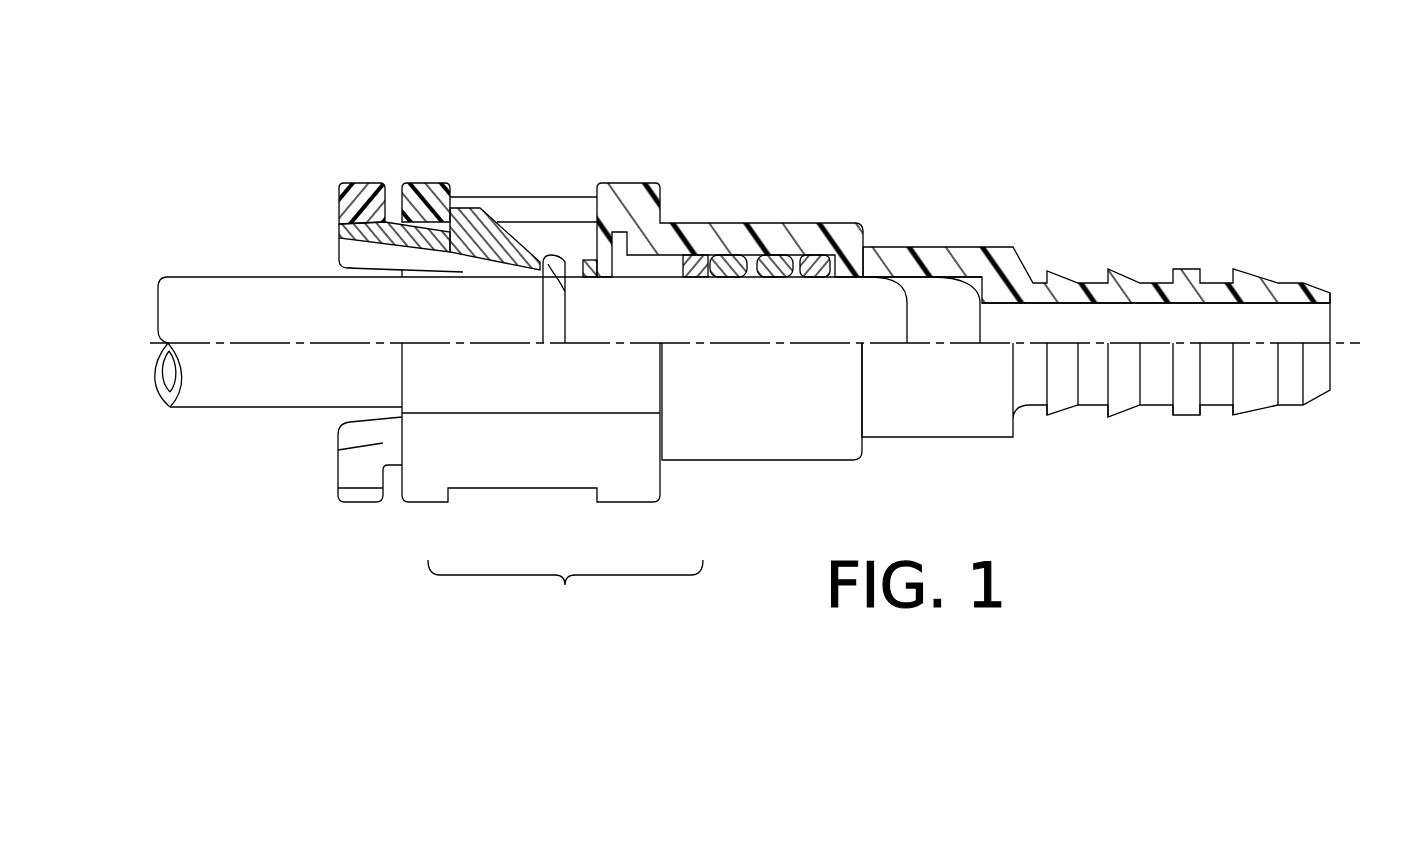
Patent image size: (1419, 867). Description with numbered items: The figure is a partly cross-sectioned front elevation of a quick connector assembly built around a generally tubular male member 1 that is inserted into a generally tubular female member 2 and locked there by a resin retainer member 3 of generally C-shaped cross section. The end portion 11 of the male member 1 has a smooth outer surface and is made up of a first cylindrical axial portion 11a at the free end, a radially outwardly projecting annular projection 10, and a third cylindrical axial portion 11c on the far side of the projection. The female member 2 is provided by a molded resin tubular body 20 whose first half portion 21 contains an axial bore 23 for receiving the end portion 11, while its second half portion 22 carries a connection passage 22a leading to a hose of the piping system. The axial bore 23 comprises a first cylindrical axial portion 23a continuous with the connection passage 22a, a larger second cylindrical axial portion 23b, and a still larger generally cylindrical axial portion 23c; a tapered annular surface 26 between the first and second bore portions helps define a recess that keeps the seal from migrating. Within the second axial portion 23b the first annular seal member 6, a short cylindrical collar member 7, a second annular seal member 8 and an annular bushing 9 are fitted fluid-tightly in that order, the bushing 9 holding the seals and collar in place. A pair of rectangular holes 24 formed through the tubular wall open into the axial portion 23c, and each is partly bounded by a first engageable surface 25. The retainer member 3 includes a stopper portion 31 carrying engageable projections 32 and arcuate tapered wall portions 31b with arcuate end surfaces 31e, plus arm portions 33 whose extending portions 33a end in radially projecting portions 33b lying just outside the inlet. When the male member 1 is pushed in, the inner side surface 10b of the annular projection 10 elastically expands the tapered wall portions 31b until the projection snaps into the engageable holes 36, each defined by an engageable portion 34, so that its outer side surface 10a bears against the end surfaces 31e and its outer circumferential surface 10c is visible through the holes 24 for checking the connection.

The male member 1 is at (236, 256).
The female member 2 is at (997, 228).
The retainer member 3 is at (334, 160).
The first annular seal member 6 is at (817, 255).
The collar member 7 is at (777, 257).
The second annular seal member 8 is at (740, 253).
The annular bushing 9 is at (692, 253).
The annular projection 10 is at (545, 345).
The outer side surface 10a is at (550, 313).
The inner side surface 10b is at (572, 325).
The outer circumferential surface 10c is at (550, 253).
The end portion 11 is at (565, 590).
The first cylindrical axial portion 11a is at (715, 330).
The third cylindrical axial portion 11c is at (437, 318).
The tubular body 20 is at (993, 260).
The first half portion 21 is at (667, 172).
The second half portion 22 is at (1263, 282).
The connection passage 22a is at (1260, 307).
The axial bore 23 is at (580, 250).
The first cylindrical axial portion 23a is at (917, 305).
The second cylindrical axial portion 23b is at (712, 252).
The generally cylindrical axial portion 23c is at (615, 245).
The rectangular hole 24 is at (590, 230).
The first engageable surface 25 is at (450, 192).
The annular surface 26 is at (838, 228).
The stopper portion 31 is at (502, 213).
The arcuate tapered wall portion 31b is at (477, 268).
The arcuate end surface 31e is at (556, 272).
The engageable projection 32 is at (470, 195).
The arm portion 33 is at (376, 162).
The extending portion 33a is at (342, 252).
The projecting portion 33b is at (345, 204).
The engageable portion 34 is at (600, 273).
The engageable hole 36 is at (575, 262).